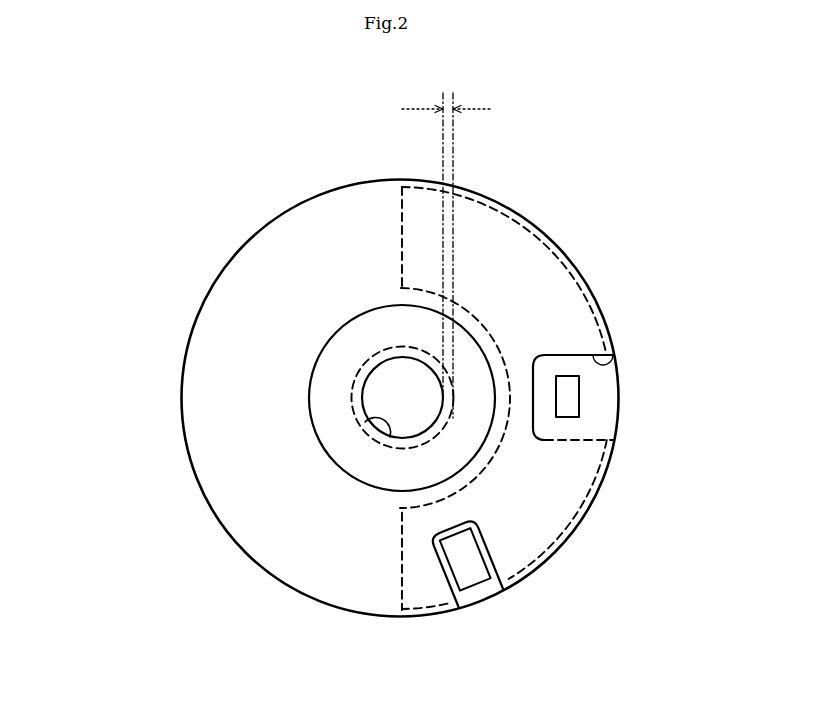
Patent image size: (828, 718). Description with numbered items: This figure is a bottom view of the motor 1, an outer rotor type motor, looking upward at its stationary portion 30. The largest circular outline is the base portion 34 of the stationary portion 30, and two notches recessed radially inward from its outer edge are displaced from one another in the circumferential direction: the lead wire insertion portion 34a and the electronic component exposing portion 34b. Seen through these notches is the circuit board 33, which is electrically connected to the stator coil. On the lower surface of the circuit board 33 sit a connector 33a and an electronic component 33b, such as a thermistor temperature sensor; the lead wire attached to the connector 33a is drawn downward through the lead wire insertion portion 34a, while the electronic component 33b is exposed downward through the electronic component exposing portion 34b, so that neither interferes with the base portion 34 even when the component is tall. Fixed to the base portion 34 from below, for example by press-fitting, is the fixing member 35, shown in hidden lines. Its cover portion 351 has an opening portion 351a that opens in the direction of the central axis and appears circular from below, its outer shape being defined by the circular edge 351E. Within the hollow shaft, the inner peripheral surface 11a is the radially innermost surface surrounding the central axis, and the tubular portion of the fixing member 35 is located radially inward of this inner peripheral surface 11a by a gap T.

The motor 1 is at (632, 238).
The stationary portion 30 is at (170, 325).
The base portion 34 is at (240, 383).
The lead wire insertion portion 34a is at (619, 362).
The electronic component exposing portion 34b is at (500, 578).
The circuit board 33 is at (598, 420).
The connector 33a is at (572, 397).
The electronic component 33b is at (468, 573).
The fixing member 35 is at (486, 329).
The cover portion 351 is at (393, 468).
The opening portion 351a is at (352, 403).
The edge 351E is at (361, 428).
The inner peripheral surface 11a is at (360, 370).
The gap T is at (447, 248).